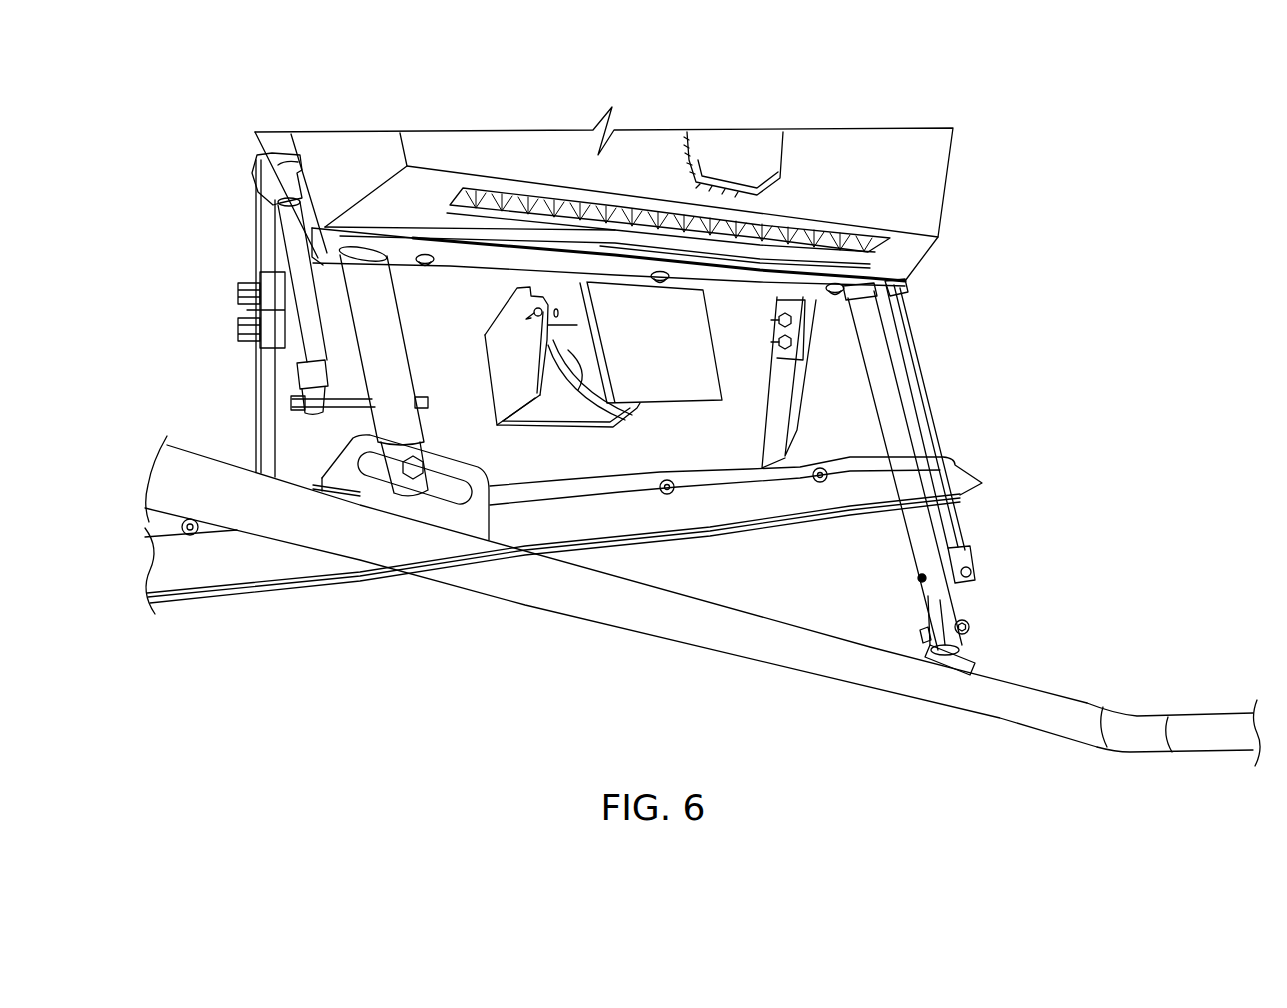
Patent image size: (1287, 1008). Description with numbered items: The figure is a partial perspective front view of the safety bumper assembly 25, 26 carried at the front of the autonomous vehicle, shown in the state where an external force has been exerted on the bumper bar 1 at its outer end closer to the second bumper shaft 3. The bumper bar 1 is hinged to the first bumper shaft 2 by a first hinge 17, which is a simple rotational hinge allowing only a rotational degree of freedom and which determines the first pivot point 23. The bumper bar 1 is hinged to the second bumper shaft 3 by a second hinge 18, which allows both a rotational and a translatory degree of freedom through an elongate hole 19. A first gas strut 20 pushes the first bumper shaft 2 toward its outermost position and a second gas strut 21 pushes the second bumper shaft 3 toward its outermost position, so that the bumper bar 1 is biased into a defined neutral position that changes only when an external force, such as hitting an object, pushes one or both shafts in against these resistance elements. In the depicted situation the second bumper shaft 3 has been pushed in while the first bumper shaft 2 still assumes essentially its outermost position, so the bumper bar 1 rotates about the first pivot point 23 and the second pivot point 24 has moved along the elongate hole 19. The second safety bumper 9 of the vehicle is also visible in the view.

The bumper bar 1 is at (1082, 723).
The first bumper shaft 2 is at (893, 400).
The second bumper shaft 3 is at (368, 320).
The second safety bumper 9 is at (208, 582).
The first hinge 17 is at (967, 660).
The second hinge 18 is at (473, 513).
The elongate hole 19 is at (370, 470).
The first gas strut 20 is at (898, 330).
The second gas strut 21 is at (292, 238).
The first pivot point 23 is at (970, 620).
The second pivot point 24 is at (413, 472).
The first safety bumper assembly 25 is at (644, 653).
The first safety bumper assembly 26 is at (968, 511).